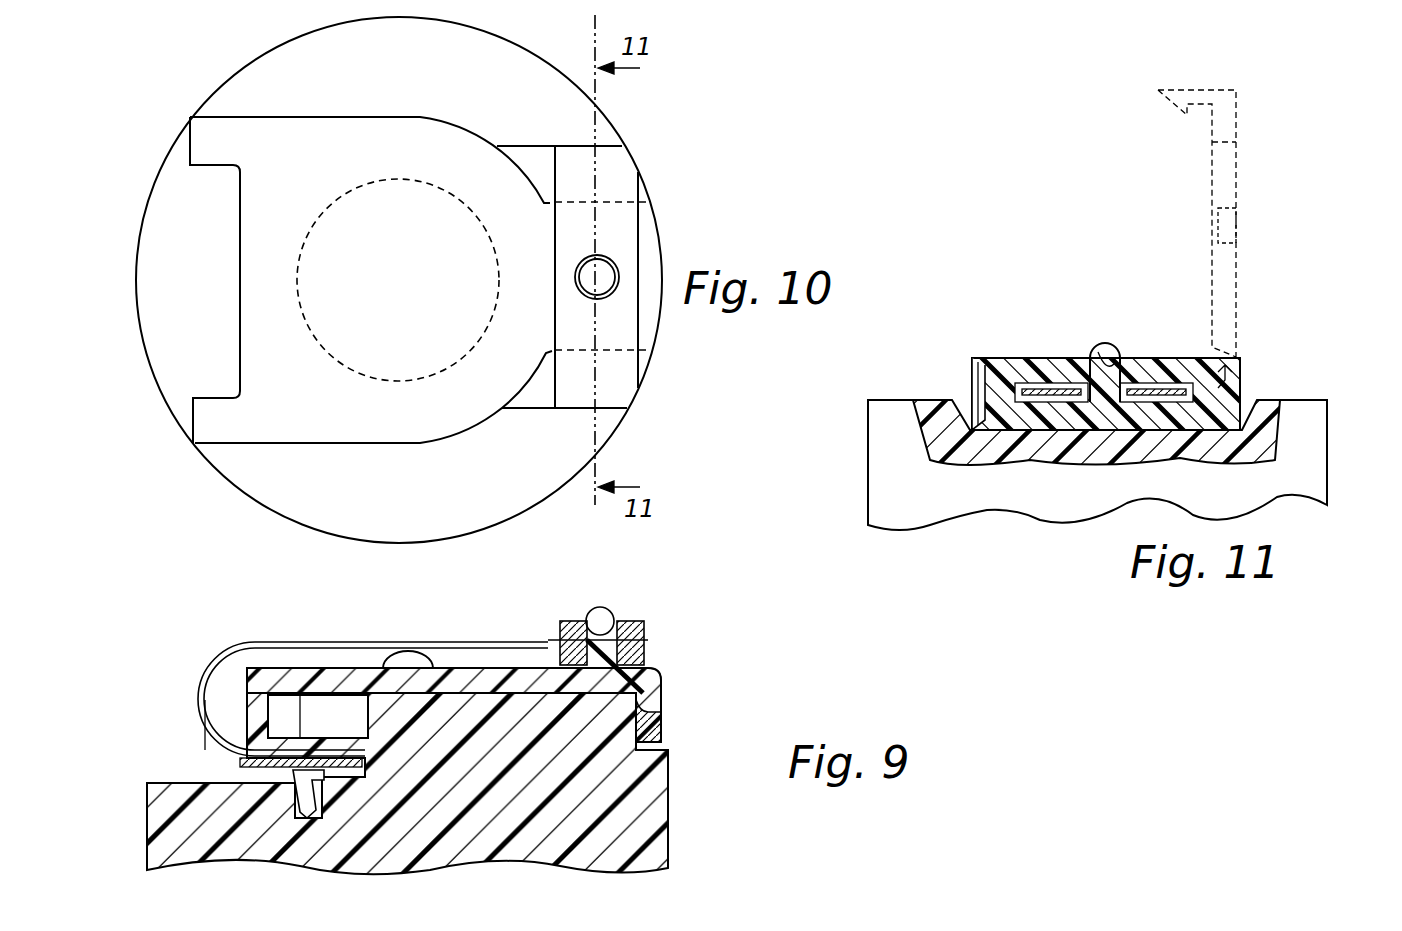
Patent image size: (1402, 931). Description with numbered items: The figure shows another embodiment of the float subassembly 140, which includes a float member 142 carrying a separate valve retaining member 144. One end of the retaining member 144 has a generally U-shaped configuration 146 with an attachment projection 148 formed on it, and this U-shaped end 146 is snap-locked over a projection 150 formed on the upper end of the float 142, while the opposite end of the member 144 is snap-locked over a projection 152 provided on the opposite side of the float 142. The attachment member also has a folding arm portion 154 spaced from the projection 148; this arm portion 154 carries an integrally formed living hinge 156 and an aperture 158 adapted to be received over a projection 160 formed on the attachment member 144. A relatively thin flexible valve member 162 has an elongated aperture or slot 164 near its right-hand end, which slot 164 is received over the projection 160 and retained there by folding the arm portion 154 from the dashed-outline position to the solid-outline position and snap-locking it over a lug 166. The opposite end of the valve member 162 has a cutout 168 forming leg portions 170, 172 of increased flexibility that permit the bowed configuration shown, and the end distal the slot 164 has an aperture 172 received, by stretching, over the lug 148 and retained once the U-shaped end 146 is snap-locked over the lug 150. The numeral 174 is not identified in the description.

In FIG. 10, the float subassembly 140 is at (690, 182).
In FIG. 11, the float subassembly 140 is at (1300, 290).
In FIG. 9, the float subassembly 140 is at (683, 690).
In FIG. 10, the float member 142 is at (232, 486).
In FIG. 11, the float member 142 is at (1327, 455).
In FIG. 9, the float member 142 is at (668, 838).
In FIG. 10, the valve retaining member 144 is at (527, 413).
In FIG. 11, the valve retaining member 144 is at (1030, 440).
In FIG. 9, the valve retaining member 144 is at (335, 668).
In FIG. 9, the U-shaped end 146 is at (248, 700).
In FIG. 9, the attachment projection 148 is at (290, 812).
In FIG. 9, the projection 150 is at (300, 695).
In FIG. 9, the projection 152 is at (660, 718).
In FIG. 11, the folding arm portion 154 is at (1040, 358).
In FIG. 9, the folding arm portion 154 is at (628, 621).
In FIG. 11, the hinge 156 is at (1242, 358).
In FIG. 11, the aperture 158 is at (1110, 358).
In FIG. 11, the projection 160 is at (1112, 352).
In FIG. 10, the valve member 162 is at (232, 117).
In FIG. 9, the valve member 162 is at (405, 660).
In FIG. 9, the elongated aperture or slot 164 is at (594, 612).
In FIG. 11, the lug 166 is at (972, 405).
In FIG. 10, the cutout 168 is at (240, 284).
In FIG. 10, the leg portion 170 is at (193, 424).
In FIG. 9, the leg portion 170 is at (195, 728).
In FIG. 10, the leg portion / aperture 172 is at (190, 160).
In FIG. 9, the inner wall 174 is at (268, 700).